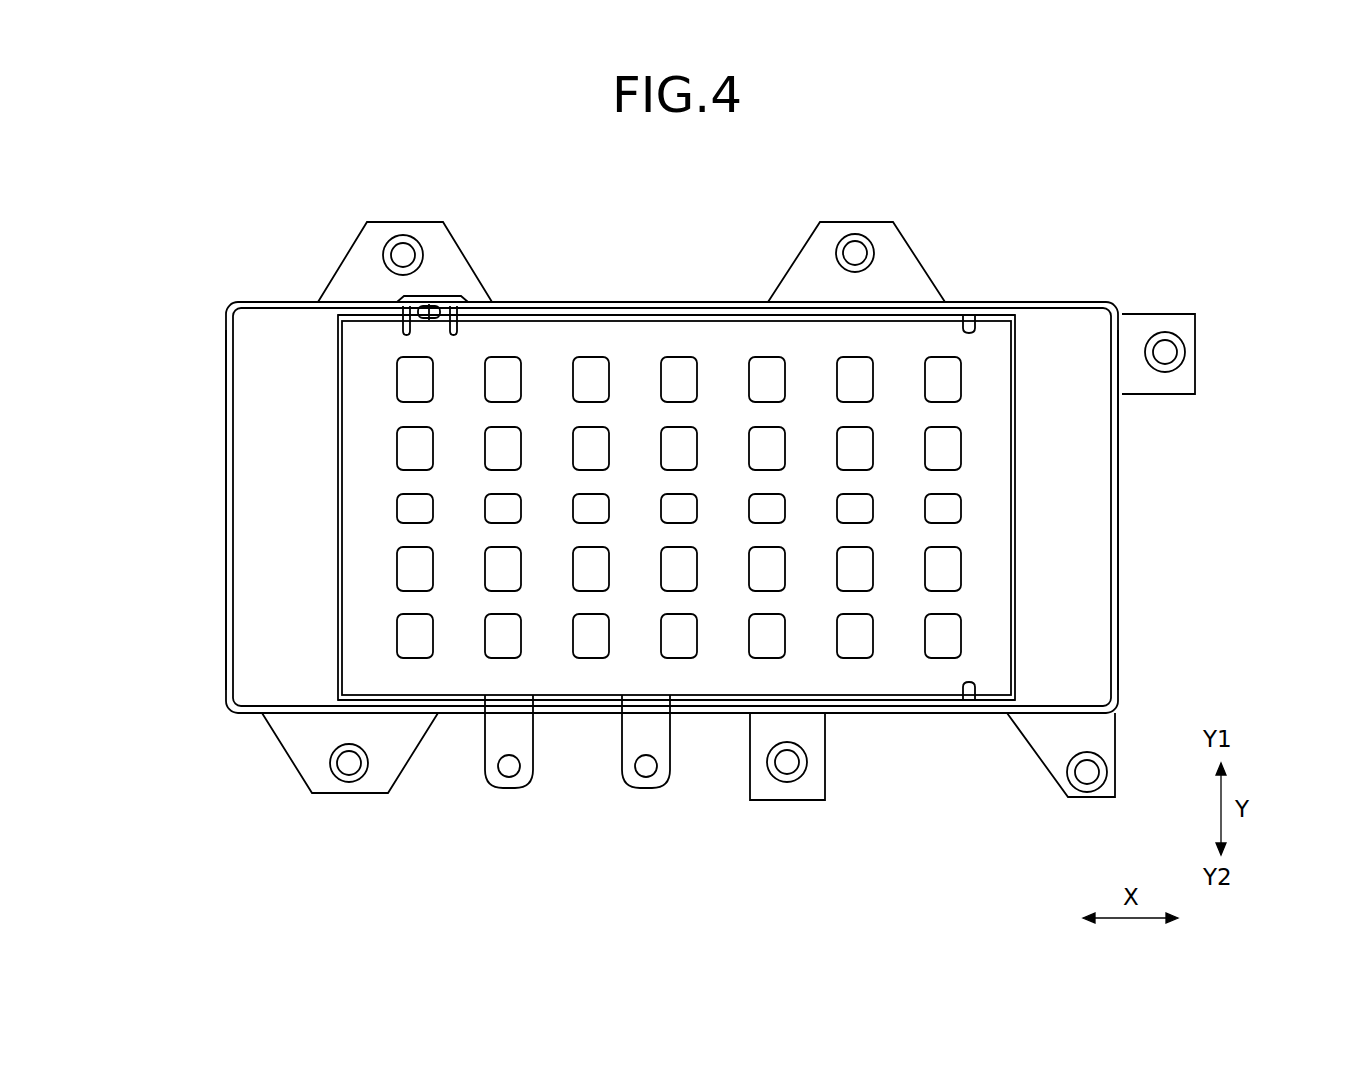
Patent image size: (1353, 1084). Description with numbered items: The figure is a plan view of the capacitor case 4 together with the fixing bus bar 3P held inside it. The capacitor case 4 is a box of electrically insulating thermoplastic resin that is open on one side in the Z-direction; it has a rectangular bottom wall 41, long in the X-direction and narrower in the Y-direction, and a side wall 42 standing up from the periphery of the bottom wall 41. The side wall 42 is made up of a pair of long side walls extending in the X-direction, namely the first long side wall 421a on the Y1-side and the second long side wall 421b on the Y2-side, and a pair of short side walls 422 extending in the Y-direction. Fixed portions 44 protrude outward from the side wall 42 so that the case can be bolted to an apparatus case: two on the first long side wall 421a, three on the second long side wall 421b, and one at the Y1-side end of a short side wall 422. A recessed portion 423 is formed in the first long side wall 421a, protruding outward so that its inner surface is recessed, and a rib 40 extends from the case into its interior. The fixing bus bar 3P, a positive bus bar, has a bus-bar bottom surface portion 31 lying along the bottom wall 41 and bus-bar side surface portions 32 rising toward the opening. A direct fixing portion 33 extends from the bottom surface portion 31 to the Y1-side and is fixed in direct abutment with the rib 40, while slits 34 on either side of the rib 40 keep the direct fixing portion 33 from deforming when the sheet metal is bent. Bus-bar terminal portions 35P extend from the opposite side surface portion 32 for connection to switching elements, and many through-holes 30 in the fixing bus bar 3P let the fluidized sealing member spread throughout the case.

The capacitor case 4 is at (1076, 302).
The rib 40 is at (428, 322).
The bottom wall 41 is at (275, 500).
The side wall 42 is at (226, 420).
The first long side wall 421a is at (648, 302).
The second long side wall 421b is at (882, 713).
The short side wall 422 is at (226, 566).
The recessed portion 423 is at (430, 310).
The fixed portion 44 is at (400, 222).
The through-hole 30 is at (674, 362).
The bus-bar bottom surface portion 31 is at (985, 430).
The bus-bar side surface portion 32 is at (380, 325).
The direct fixing portion 33 is at (394, 325).
The slit 34 is at (345, 322).
The bus-bar terminal portion 35P is at (510, 788).
The fixing bus bar 3P is at (985, 576).